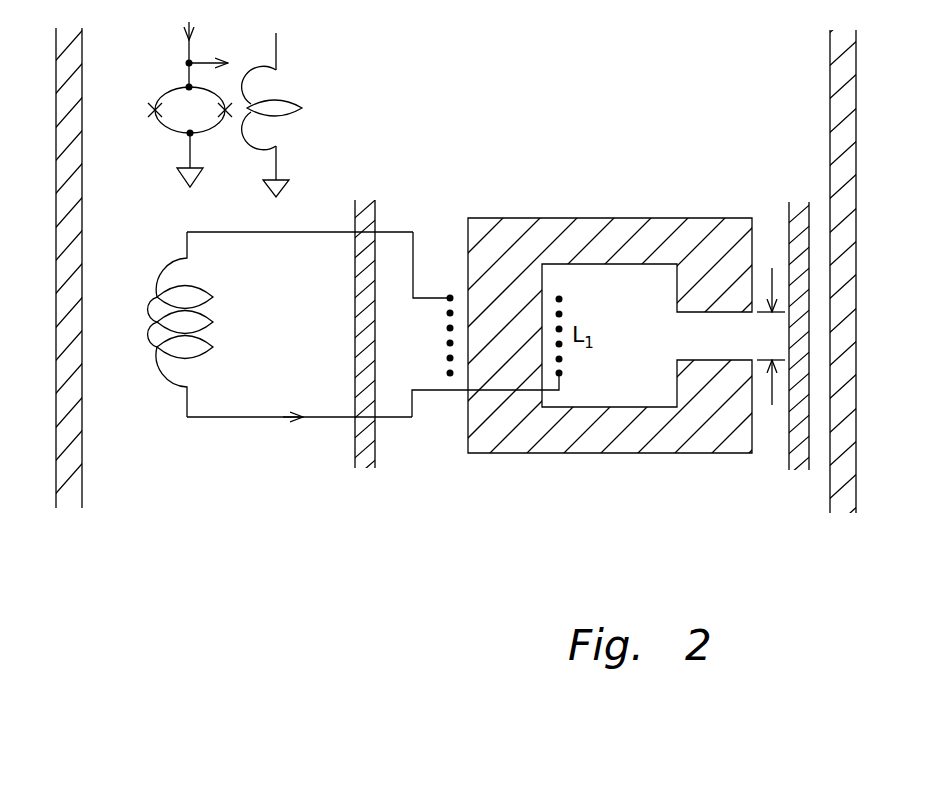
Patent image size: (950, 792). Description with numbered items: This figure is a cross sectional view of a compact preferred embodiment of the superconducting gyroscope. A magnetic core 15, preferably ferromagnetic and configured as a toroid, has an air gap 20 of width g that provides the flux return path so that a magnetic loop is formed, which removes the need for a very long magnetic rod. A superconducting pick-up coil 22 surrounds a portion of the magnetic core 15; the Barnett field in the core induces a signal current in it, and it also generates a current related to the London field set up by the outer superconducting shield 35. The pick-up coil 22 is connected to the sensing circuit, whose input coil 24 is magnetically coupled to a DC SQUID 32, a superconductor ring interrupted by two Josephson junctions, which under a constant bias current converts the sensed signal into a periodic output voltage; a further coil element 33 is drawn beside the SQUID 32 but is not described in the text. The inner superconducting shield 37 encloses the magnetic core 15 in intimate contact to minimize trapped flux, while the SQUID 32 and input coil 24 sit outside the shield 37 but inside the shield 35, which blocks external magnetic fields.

The magnetic core 15 is at (490, 443).
The air gap 20 is at (687, 341).
The pick-up coil 22 is at (436, 333).
The input coil 24 is at (265, 342).
The DC SQUID 32 is at (172, 104).
The flux transformer coil 33 is at (291, 90).
The superconducting shield 35 is at (80, 418).
The superconducting shield 37 is at (355, 447).